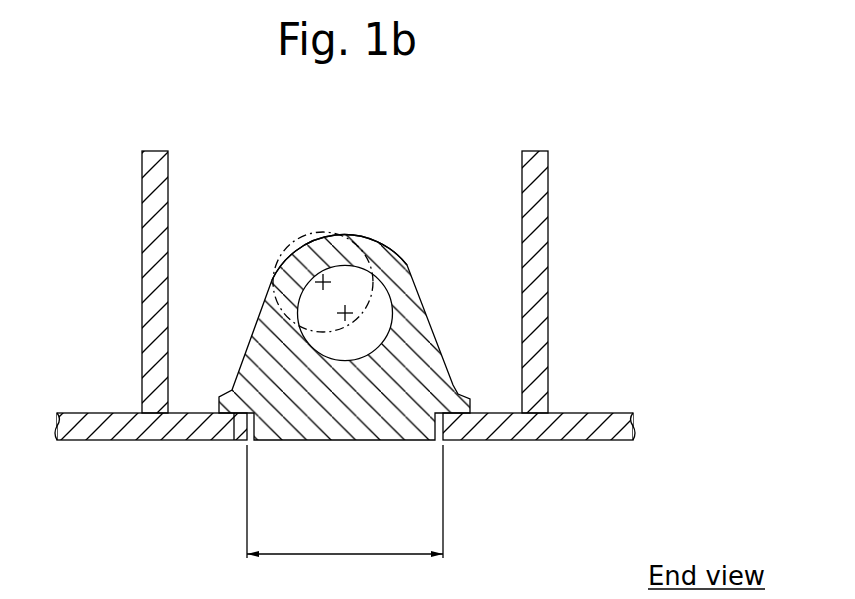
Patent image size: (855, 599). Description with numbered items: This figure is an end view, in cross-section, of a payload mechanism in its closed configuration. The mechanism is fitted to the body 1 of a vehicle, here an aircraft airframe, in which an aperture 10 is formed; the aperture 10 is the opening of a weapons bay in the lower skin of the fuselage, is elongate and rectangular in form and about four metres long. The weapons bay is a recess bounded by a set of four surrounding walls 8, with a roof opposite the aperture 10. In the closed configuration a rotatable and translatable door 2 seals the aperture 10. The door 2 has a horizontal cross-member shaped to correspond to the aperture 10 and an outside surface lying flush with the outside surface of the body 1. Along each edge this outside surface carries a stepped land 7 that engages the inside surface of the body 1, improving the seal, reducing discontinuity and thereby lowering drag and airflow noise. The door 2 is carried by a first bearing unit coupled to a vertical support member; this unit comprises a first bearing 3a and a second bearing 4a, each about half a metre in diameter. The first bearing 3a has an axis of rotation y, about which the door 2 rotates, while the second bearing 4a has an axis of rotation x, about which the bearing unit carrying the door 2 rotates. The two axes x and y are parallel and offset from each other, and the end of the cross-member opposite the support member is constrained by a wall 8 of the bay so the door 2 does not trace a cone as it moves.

The body 1 is at (582, 447).
The door 2 is at (347, 450).
The first bearing 3a is at (399, 266).
The second bearing 4a is at (294, 236).
The stepped land 7 is at (234, 430).
The wall 8 is at (535, 233).
The aperture 10 is at (322, 554).
The axis of rotation x is at (323, 280).
The axis of rotation y is at (346, 310).